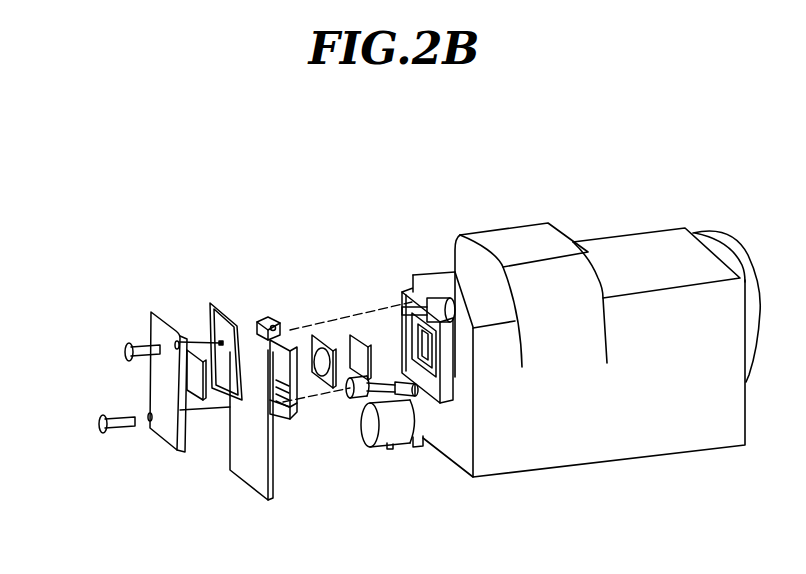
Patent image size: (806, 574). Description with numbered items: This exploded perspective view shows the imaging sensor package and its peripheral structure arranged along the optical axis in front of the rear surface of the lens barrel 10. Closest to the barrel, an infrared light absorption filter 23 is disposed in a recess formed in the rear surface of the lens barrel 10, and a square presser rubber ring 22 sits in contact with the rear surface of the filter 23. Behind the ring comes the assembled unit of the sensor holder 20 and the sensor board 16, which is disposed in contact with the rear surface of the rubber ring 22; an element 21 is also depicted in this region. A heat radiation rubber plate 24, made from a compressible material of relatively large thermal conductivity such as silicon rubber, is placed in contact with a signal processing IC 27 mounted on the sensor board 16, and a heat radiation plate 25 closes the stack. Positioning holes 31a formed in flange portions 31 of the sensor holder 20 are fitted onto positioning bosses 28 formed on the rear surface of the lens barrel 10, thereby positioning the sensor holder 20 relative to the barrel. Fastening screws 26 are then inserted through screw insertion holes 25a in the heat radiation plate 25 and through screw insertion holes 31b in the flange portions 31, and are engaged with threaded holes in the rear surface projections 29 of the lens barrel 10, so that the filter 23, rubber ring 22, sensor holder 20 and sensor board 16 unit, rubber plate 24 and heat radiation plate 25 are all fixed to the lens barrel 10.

The lens barrel 10 is at (618, 226).
The sensor board 16 is at (245, 467).
The sensor holder 20 is at (291, 440).
The lens 21 is at (313, 333).
The square presser rubber ring 22 is at (333, 312).
The infrared light absorption filter 23 is at (357, 336).
The heat radiation rubber plate 24 is at (193, 349).
The heat radiation plate 25 is at (152, 372).
The screw insertion holes 25a is at (177, 340).
The fastening screws 26 is at (100, 420).
The signal processing IC 27 is at (224, 350).
The positioning bosses 28 is at (413, 273).
The rear surface projections 29 is at (388, 375).
The flange portions 31 is at (310, 339).
The positioning holes 31a is at (268, 316).
The screw insertion holes 31b is at (300, 404).